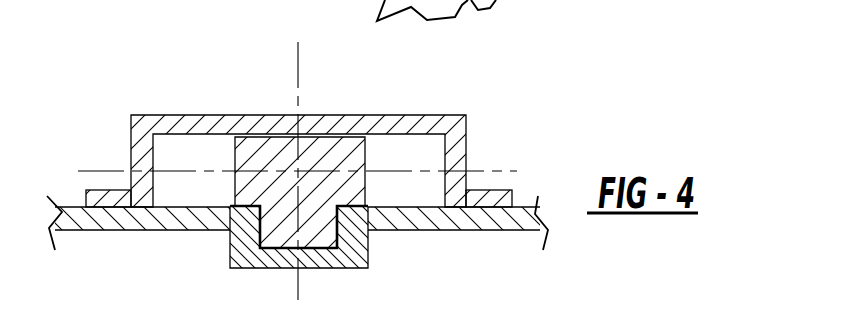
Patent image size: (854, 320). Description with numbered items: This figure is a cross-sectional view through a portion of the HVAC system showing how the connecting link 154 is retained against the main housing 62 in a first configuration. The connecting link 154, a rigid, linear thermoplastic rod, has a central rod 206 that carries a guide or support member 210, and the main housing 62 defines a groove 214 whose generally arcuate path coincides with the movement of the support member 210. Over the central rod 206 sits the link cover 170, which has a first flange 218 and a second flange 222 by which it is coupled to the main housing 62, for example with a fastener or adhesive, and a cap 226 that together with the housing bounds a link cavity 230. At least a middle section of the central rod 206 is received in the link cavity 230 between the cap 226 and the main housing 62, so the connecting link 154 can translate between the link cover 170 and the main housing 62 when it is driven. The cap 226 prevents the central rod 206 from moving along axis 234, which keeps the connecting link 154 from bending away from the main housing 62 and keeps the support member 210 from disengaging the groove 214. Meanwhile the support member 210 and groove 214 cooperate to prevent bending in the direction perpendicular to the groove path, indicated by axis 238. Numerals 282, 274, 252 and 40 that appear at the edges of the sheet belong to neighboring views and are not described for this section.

The main housing 62 is at (95, 220).
The connecting link 154 is at (340, 152).
The link cover 170 is at (140, 113).
The central rod 206 is at (236, 150).
The support member 210 is at (320, 240).
The groove 214 is at (258, 240).
The first flange 218 is at (118, 200).
The second flange 222 is at (475, 200).
The cap 226 is at (428, 125).
The link cavity 230 is at (168, 155).
The axis 234 is at (298, 63).
The axis 238 is at (507, 168).
The adjacent figure element 282 is at (458, 310).
The adjacent figure element 274 is at (738, 311).
The adjacent figure element 252 is at (639, 316).
The adjacent figure element 40 is at (748, 7).